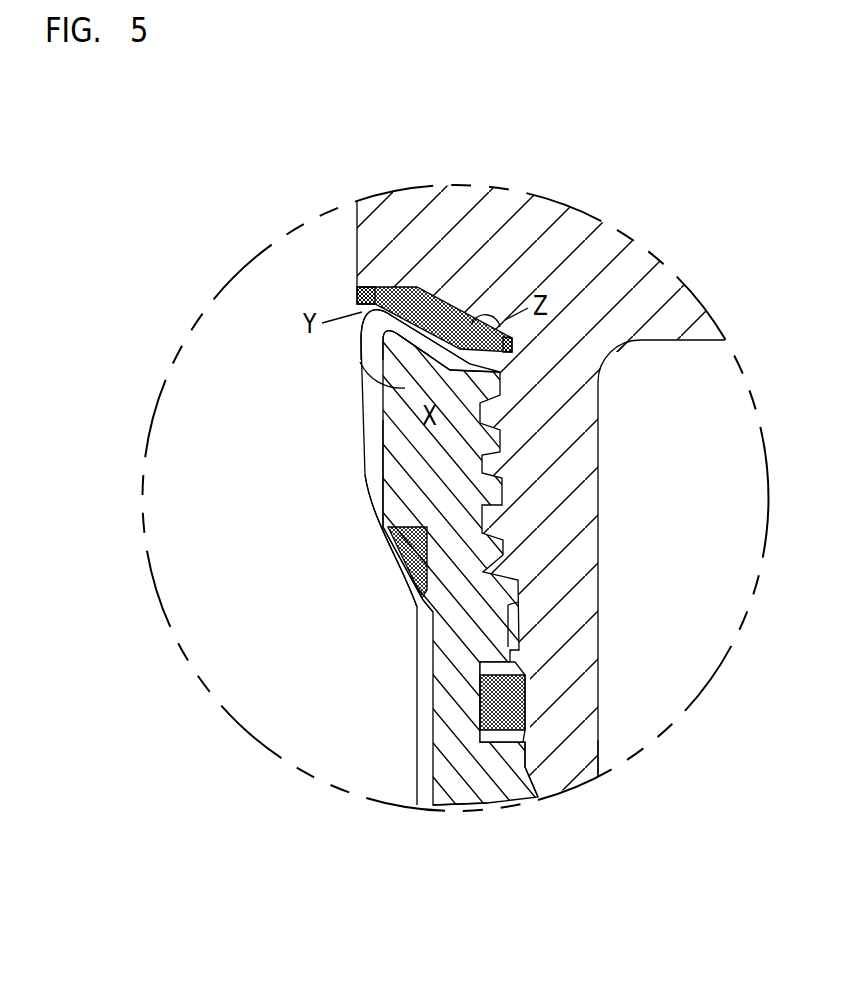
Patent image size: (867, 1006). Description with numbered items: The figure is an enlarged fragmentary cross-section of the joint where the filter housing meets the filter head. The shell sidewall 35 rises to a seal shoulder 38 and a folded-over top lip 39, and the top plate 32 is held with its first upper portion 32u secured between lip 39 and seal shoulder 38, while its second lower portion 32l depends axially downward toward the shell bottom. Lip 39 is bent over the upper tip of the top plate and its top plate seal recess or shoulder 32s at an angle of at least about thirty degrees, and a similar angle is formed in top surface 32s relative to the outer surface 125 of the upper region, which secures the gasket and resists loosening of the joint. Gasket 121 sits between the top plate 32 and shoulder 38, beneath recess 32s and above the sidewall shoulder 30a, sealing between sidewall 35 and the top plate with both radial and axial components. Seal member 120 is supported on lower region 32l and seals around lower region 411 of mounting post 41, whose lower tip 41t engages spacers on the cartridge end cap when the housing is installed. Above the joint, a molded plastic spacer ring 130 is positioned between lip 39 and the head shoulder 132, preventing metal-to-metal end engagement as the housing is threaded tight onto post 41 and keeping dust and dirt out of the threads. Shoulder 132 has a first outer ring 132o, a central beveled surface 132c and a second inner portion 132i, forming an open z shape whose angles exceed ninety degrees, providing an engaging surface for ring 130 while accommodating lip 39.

The shoulder 132 is at (437, 230).
The first outer ring 132o is at (375, 287).
The central beveled surface 132c is at (470, 312).
The second inner portion 132i is at (505, 343).
The spacer ring 130 is at (460, 305).
The top lip 39 is at (415, 335).
The top plate 32 is at (450, 548).
The first upper portion of top plate 32u is at (392, 361).
The top plate seal recess or shoulder 32s is at (388, 505).
The second lower portion of top plate 32l is at (463, 788).
The outer surface of upper region 125 is at (360, 373).
The gasket 121 is at (390, 530).
The sidewall shoulder 30a is at (400, 570).
The seal shoulder 38 is at (422, 580).
The sidewall 35 is at (417, 745).
The seal member 120 is at (510, 698).
The mounting post 41 is at (570, 712).
The lower region of mounting post 411 is at (555, 730).
The lower tip of post 41t is at (592, 765).